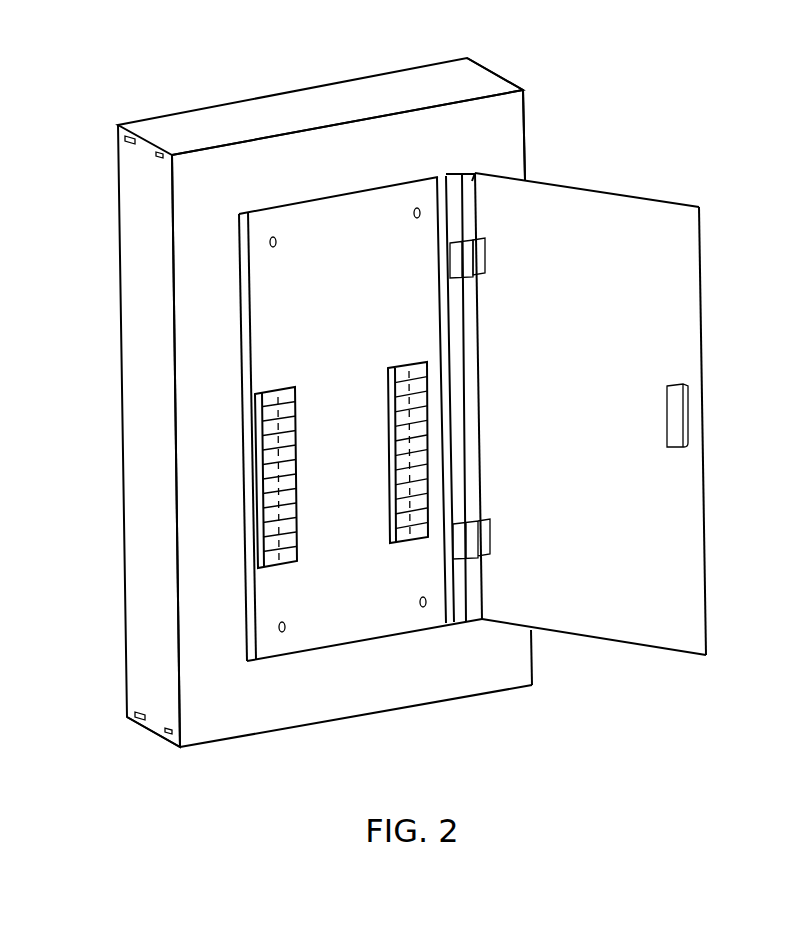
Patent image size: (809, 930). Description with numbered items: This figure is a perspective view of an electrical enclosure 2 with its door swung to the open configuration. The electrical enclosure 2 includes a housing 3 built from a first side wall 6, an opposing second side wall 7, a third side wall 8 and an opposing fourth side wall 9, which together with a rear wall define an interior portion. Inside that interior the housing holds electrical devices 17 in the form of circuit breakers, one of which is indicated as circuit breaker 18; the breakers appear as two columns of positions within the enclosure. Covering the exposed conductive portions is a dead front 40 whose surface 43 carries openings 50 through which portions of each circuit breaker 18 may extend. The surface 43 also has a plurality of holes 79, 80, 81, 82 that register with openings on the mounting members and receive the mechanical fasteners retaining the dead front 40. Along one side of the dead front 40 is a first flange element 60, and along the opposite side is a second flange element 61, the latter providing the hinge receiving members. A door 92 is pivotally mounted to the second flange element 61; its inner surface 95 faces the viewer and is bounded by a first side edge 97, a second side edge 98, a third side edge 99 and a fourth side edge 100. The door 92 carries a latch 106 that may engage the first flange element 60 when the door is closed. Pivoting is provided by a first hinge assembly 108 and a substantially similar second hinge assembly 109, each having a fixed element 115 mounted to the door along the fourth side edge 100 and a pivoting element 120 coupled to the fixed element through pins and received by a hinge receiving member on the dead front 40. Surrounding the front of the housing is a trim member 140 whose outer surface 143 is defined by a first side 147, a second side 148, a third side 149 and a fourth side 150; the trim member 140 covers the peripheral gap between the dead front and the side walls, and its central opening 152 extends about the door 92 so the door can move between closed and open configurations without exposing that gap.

The electrical enclosure 2 is at (208, 66).
The housing 3 is at (146, 283).
The first side wall 6 is at (142, 402).
The second side wall 7 is at (498, 72).
The third side wall 8 is at (324, 105).
The fourth side wall 9 is at (152, 735).
The electrical devices 17 is at (292, 388).
The circuit breaker 18 is at (262, 402).
The dead front 40 is at (333, 600).
The surface 43 is at (307, 532).
The openings 50 is at (400, 468).
The first flange element 60 is at (247, 310).
The second flange element 61 is at (445, 315).
The hole 79 is at (273, 248).
The hole 80 is at (412, 212).
The hole 81 is at (283, 620).
The hole 82 is at (418, 601).
The door 92 is at (569, 392).
The inner surface 95 is at (648, 522).
The first side edge 97 is at (570, 183).
The second side edge 98 is at (607, 643).
The third side edge 99 is at (706, 600).
The fourth side edge 100 is at (473, 182).
The latch 106 is at (656, 392).
The first hinge assembly 108 is at (473, 287).
The second hinge assembly 109 is at (472, 508).
The fixed element 115 is at (475, 256).
The pivoting element 120 is at (453, 250).
The trim member 140 is at (281, 697).
The outer surface 143 is at (448, 675).
The first side 147 is at (197, 150).
The second side 148 is at (360, 715).
The third side 149 is at (178, 612).
The fourth side 150 is at (525, 128).
The central opening 152 is at (248, 240).